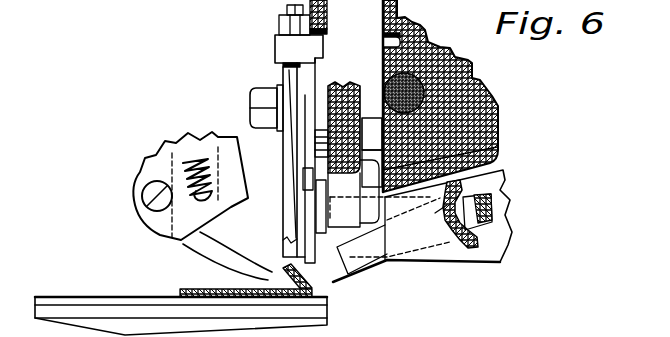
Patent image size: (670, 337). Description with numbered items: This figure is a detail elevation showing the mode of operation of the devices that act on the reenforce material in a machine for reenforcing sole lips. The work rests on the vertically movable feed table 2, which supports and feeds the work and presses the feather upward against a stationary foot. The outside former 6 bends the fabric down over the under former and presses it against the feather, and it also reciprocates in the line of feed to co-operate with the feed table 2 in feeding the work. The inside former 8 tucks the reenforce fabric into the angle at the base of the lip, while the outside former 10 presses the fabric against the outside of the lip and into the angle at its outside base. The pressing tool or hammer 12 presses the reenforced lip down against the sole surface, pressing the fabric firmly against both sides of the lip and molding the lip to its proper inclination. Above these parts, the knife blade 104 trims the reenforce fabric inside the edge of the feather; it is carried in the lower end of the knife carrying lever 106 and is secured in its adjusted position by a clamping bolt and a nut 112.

The feed table 2 is at (328, 306).
The outside former 6 is at (302, 182).
The inside former 8 is at (222, 282).
The outside former 10 is at (332, 283).
The pressing tool or hammer 12 is at (277, 244).
The knife blade 104 is at (322, 125).
The knife carrying lever 106 is at (350, 84).
The nut 112 is at (497, 147).